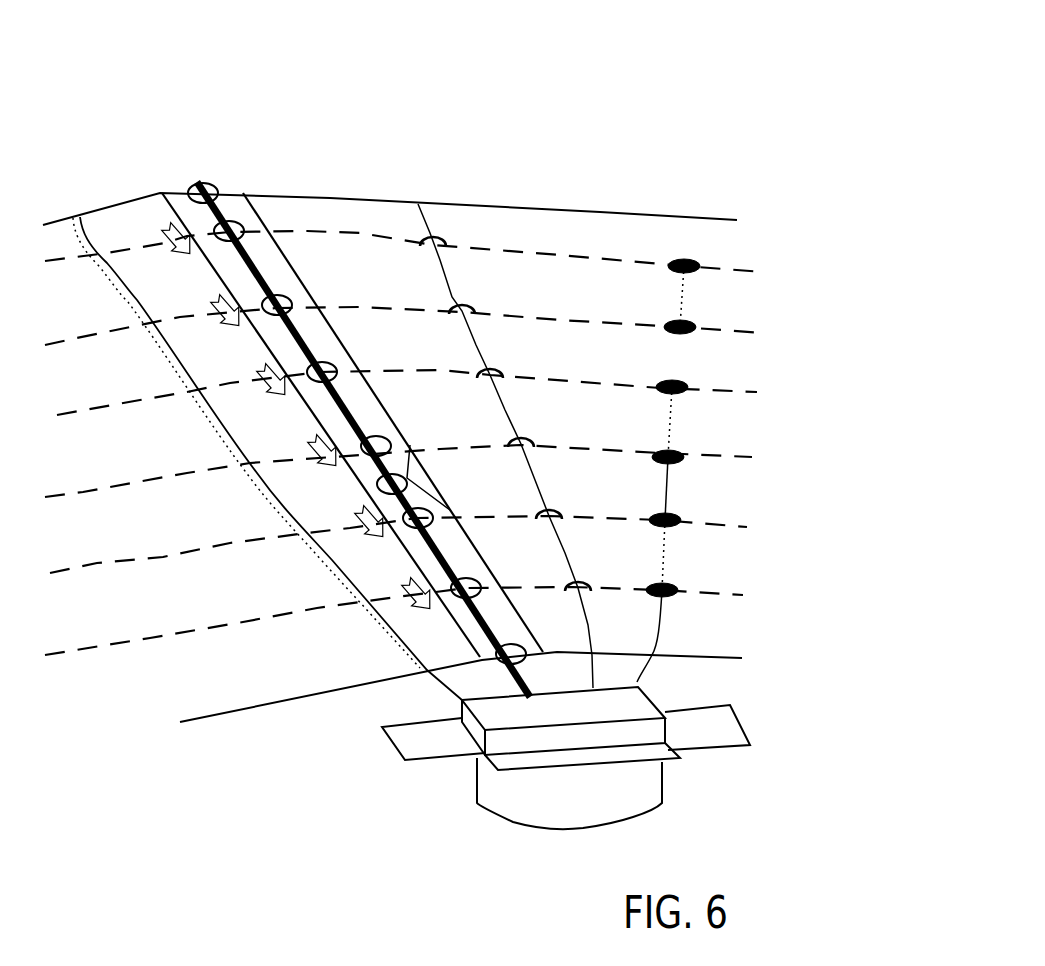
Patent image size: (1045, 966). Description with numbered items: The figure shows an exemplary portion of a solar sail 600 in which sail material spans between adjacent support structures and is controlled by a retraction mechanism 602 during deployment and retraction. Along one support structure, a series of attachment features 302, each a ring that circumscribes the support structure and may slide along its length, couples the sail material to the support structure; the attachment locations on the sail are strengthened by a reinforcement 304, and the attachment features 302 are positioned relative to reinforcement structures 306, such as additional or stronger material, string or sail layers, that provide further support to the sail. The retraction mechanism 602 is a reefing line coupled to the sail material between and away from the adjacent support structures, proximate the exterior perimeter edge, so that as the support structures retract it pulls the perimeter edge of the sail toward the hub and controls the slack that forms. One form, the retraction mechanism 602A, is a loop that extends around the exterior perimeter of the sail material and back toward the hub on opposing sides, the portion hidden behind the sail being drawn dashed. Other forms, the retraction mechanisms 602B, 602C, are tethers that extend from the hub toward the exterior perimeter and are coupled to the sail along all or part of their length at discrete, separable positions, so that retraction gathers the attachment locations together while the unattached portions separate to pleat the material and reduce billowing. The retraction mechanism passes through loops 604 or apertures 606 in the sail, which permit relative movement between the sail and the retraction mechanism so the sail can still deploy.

The solar sail portion 600 is at (824, 175).
The attachment feature 302 is at (238, 225).
The reinforcement 304 is at (183, 227).
The reinforcement structure 306 is at (743, 527).
The retraction mechanism 602 is at (570, 356).
The retraction mechanism loop 602A is at (108, 258).
The retraction mechanism tether 602B is at (432, 240).
The retraction mechanism tether 602C is at (682, 258).
The loops 604 is at (457, 313).
The apertures 606 is at (688, 331).